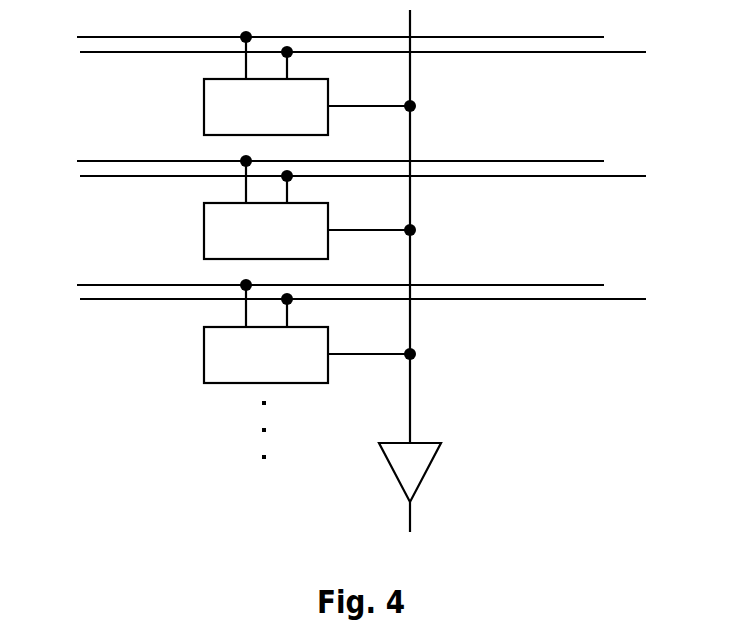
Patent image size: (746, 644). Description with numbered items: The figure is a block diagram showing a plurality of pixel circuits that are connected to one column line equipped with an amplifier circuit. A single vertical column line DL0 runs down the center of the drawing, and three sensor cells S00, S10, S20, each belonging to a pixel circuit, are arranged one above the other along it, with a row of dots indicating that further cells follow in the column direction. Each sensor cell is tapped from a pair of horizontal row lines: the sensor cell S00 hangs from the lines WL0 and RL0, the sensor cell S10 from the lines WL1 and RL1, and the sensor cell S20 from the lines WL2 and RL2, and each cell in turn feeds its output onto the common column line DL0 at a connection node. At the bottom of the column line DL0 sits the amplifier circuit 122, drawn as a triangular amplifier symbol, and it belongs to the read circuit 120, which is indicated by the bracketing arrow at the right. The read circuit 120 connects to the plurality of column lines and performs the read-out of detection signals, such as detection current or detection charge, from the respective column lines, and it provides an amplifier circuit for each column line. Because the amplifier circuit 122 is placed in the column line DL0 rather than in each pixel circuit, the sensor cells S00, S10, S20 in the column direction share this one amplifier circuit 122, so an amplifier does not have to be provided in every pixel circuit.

The read circuit 120 is at (361, 271).
The amplifier circuit 122 is at (424, 473).
The column line DL0 is at (410, 399).
The word line WL0 is at (318, 36).
The word line WL1 is at (318, 161).
The word line WL2 is at (318, 285).
The read line RL0 is at (385, 50).
The read line RL1 is at (385, 174).
The read line RL2 is at (385, 297).
The sensor cell S00 is at (307, 83).
The sensor cell S10 is at (307, 207).
The sensor cell S20 is at (307, 331).